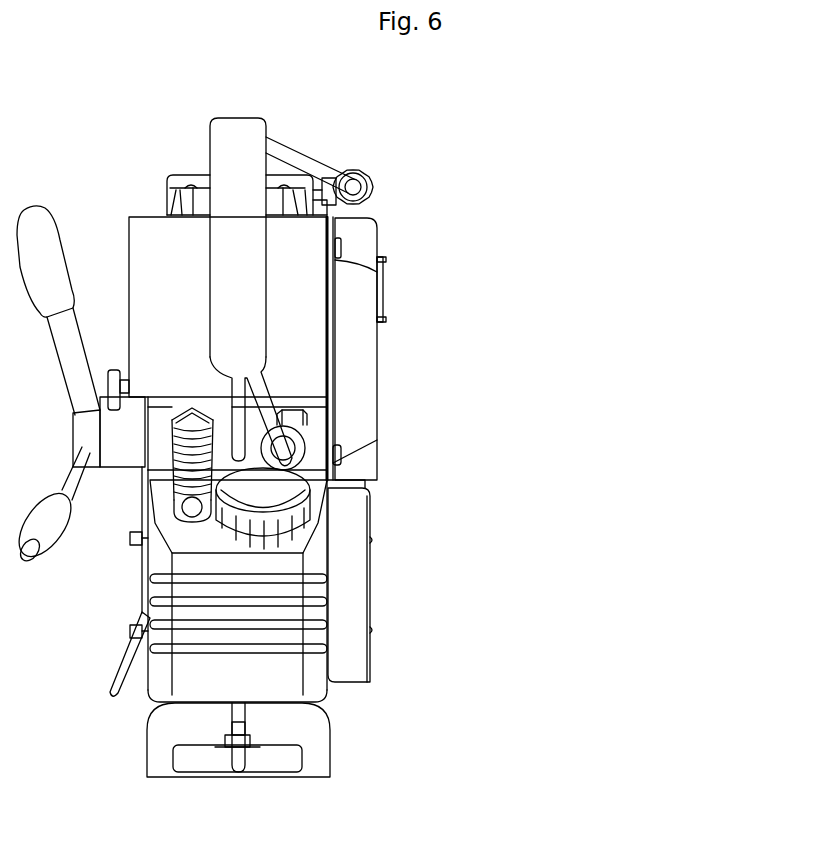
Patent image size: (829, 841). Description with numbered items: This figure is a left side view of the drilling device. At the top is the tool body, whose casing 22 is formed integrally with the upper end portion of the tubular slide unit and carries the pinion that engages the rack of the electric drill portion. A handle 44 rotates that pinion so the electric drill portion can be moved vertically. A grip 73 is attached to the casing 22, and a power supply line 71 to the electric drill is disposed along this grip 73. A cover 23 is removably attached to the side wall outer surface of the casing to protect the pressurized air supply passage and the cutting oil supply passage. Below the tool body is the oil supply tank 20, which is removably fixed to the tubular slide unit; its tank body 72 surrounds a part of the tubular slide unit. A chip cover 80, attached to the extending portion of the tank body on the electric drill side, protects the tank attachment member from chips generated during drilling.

The oil supply tank 20 is at (322, 540).
The casing 22 is at (305, 372).
The cover 23 is at (368, 243).
The handle 44 is at (27, 200).
The power supply line 71 is at (302, 147).
The tank body 72 is at (328, 668).
The grip 73 is at (245, 322).
The chip cover 80 is at (370, 578).